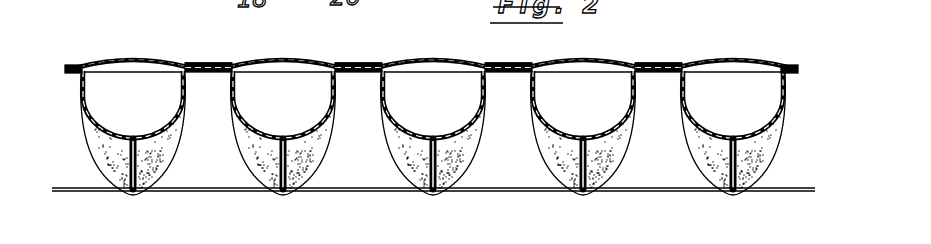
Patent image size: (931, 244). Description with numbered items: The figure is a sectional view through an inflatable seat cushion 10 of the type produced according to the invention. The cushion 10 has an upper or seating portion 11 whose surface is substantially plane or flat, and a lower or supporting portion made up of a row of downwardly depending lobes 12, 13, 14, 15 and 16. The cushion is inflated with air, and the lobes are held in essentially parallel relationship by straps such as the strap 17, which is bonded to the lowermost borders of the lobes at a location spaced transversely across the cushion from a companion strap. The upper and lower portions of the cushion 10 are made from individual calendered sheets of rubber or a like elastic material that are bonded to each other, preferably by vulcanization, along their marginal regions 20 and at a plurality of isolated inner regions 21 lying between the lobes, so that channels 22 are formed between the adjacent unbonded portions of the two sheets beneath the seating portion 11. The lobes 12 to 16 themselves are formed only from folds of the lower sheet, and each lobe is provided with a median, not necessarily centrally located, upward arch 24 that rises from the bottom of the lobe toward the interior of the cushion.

The seat cushion 10 is at (430, 62).
The upper or seating portion 11 is at (432, 48).
The lobe 12 is at (95, 148).
The lobe 13 is at (245, 155).
The lobe 14 is at (392, 157).
The lobe 15 is at (537, 155).
The lobe 16 is at (687, 155).
The strap 17 is at (322, 193).
The marginal region 20 is at (74, 63).
The isolated inner region 21 is at (206, 73).
The channel 22 is at (222, 63).
The upward arch 24 is at (147, 194).